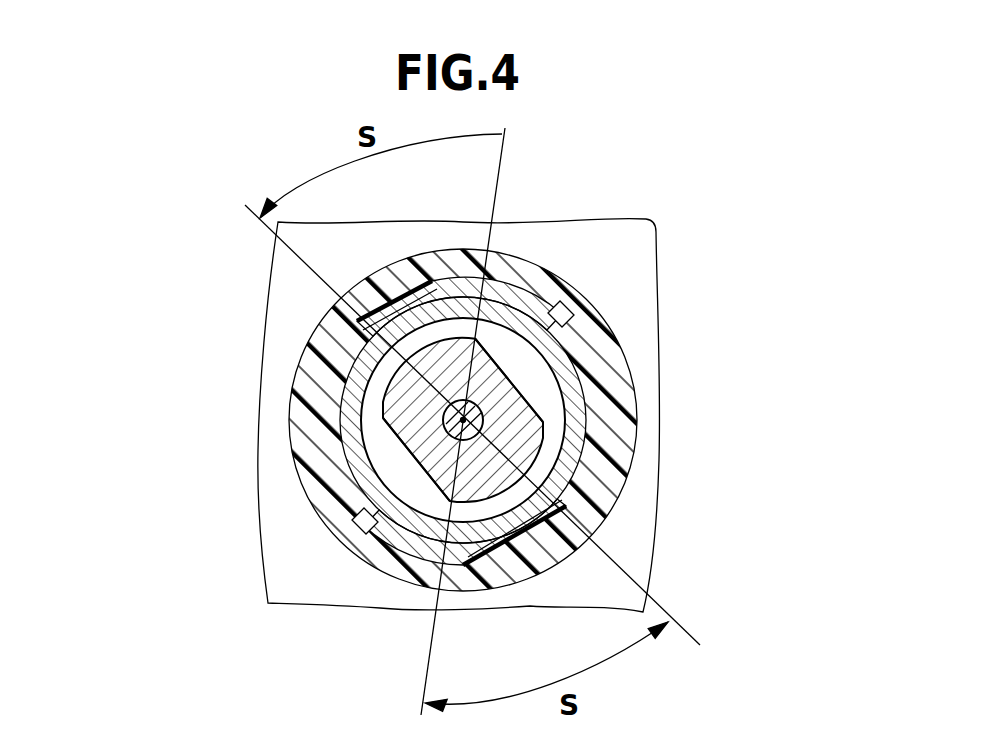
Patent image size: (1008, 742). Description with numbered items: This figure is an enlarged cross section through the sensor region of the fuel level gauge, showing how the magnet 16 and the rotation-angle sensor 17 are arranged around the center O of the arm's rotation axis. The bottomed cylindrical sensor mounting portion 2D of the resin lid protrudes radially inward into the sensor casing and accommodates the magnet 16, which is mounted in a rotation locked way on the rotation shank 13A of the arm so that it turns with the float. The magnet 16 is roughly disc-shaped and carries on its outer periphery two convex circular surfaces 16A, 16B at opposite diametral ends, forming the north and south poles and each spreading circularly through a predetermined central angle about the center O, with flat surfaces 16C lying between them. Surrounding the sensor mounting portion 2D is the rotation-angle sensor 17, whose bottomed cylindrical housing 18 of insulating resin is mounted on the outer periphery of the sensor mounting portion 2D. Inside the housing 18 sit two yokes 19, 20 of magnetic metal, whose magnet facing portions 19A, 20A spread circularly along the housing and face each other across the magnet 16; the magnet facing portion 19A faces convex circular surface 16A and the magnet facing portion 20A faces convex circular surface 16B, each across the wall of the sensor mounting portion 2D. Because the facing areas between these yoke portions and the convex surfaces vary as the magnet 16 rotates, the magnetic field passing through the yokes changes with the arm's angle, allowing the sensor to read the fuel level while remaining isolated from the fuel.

The sensor mounting portion 2D is at (410, 457).
The rotation shank 13A is at (471, 412).
The magnet 16 is at (503, 400).
The convex circular surface 16A is at (383, 381).
The convex circular surface 16B is at (536, 471).
The flat surfaces 16C is at (512, 346).
The rotation-angle sensor 17 is at (600, 298).
The housing 18 is at (344, 331).
The yoke 19 is at (380, 290).
The magnet facing portion 19A is at (441, 285).
The yoke 20 is at (503, 546).
The magnet facing portion 20A is at (361, 540).
The center O is at (423, 451).